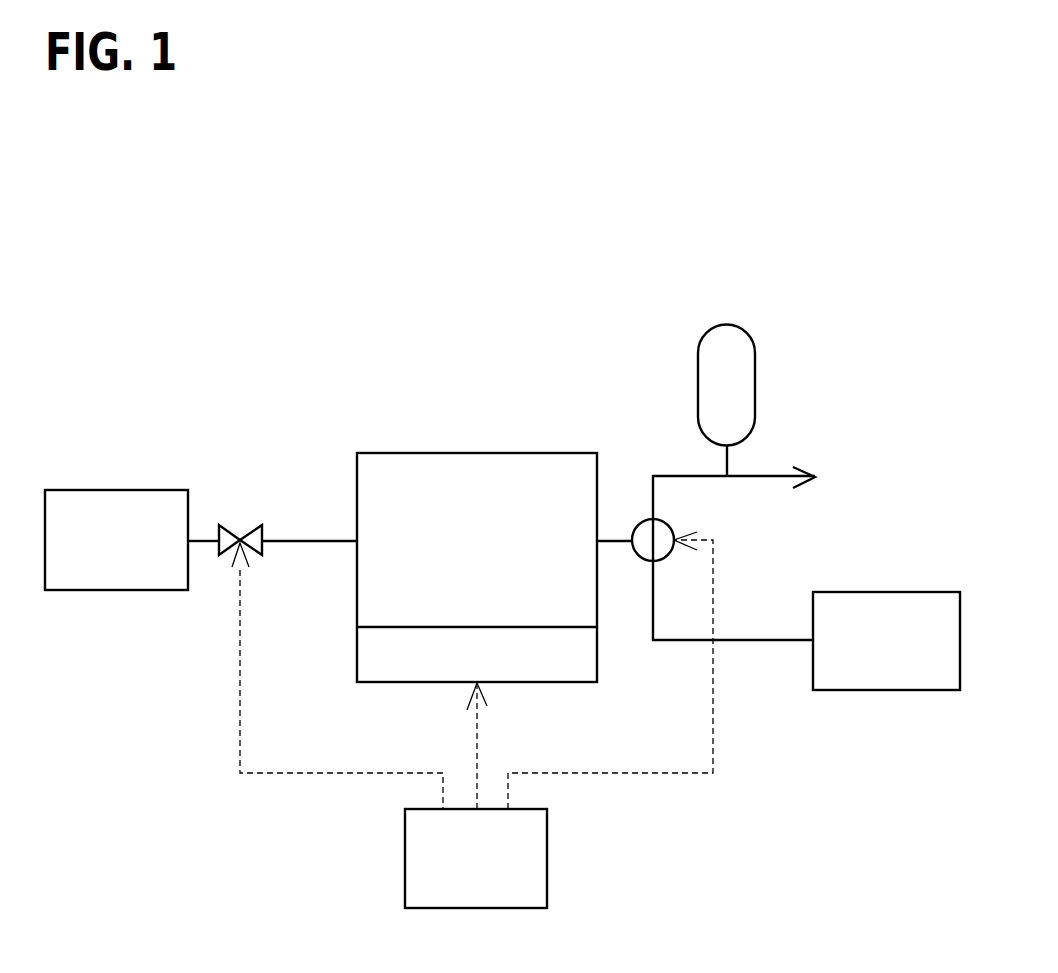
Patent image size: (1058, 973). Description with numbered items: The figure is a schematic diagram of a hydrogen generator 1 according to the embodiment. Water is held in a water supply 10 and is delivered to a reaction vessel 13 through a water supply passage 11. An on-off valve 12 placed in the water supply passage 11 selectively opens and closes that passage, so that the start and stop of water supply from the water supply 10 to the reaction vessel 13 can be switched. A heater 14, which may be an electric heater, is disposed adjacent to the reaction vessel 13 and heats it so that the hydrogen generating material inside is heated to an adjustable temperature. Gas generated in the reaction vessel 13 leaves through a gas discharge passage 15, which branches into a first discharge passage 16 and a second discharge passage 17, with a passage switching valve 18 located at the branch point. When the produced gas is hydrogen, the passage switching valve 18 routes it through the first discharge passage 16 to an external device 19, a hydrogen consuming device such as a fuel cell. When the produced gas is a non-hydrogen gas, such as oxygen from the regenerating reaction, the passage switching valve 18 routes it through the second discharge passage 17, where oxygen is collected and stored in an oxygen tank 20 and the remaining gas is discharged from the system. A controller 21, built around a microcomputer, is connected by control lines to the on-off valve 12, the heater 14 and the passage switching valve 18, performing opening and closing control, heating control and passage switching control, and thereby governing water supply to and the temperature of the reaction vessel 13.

The hydrogen generator 1 is at (504, 527).
The water supply 10 is at (110, 490).
The water supply passage 11 is at (204, 537).
The on-off valve 12 is at (240, 537).
The reaction vessel 13 is at (467, 453).
The heater 14 is at (597, 660).
The gas discharge passage 15 is at (612, 538).
The first discharge passage 16 is at (680, 642).
The second discharge passage 17 is at (678, 475).
The passage switching valve 18 is at (633, 518).
The external device 19 is at (885, 692).
The oxygen tank 20 is at (756, 383).
The controller 21 is at (547, 858).